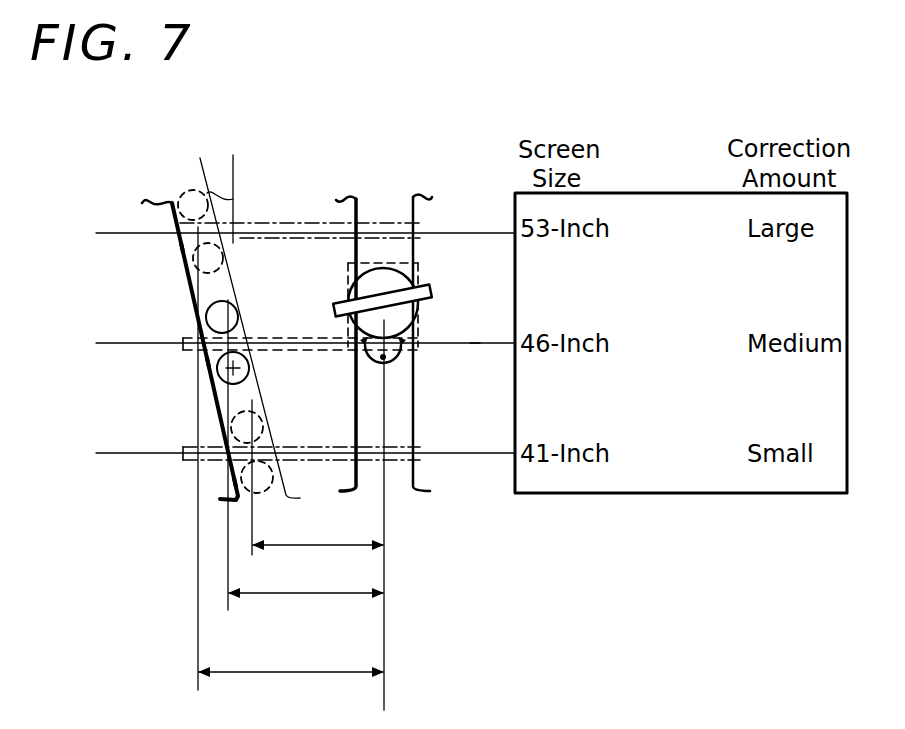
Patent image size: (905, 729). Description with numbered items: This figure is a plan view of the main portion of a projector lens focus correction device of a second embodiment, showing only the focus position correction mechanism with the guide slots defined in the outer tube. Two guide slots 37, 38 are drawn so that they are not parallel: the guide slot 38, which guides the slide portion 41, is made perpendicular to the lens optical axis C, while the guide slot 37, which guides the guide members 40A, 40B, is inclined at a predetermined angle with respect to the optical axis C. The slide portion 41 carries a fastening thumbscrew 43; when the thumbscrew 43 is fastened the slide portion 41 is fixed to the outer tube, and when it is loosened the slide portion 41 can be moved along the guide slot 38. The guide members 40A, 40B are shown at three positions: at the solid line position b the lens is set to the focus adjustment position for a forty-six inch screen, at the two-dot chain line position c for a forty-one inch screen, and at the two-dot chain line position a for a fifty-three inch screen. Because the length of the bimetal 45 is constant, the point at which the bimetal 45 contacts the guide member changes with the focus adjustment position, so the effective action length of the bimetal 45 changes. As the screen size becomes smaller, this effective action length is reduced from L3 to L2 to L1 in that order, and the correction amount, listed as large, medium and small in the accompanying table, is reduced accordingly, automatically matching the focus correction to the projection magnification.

The guide slot 37 is at (185, 175).
The guide slot 38 is at (380, 184).
The slide portion 41 is at (398, 264).
The thumbscrew 43 is at (395, 280).
The bimetal 45 is at (302, 222).
The guide member 40A is at (232, 369).
The guide member 40B is at (214, 313).
The two-dot chain line position a is at (174, 243).
The solid line position b is at (192, 362).
The two-dot chain line position c is at (222, 482).
The lens optical axis C is at (476, 345).
The effective action length L1 is at (318, 563).
The effective action length L2 is at (306, 614).
The effective action length L3 is at (291, 692).